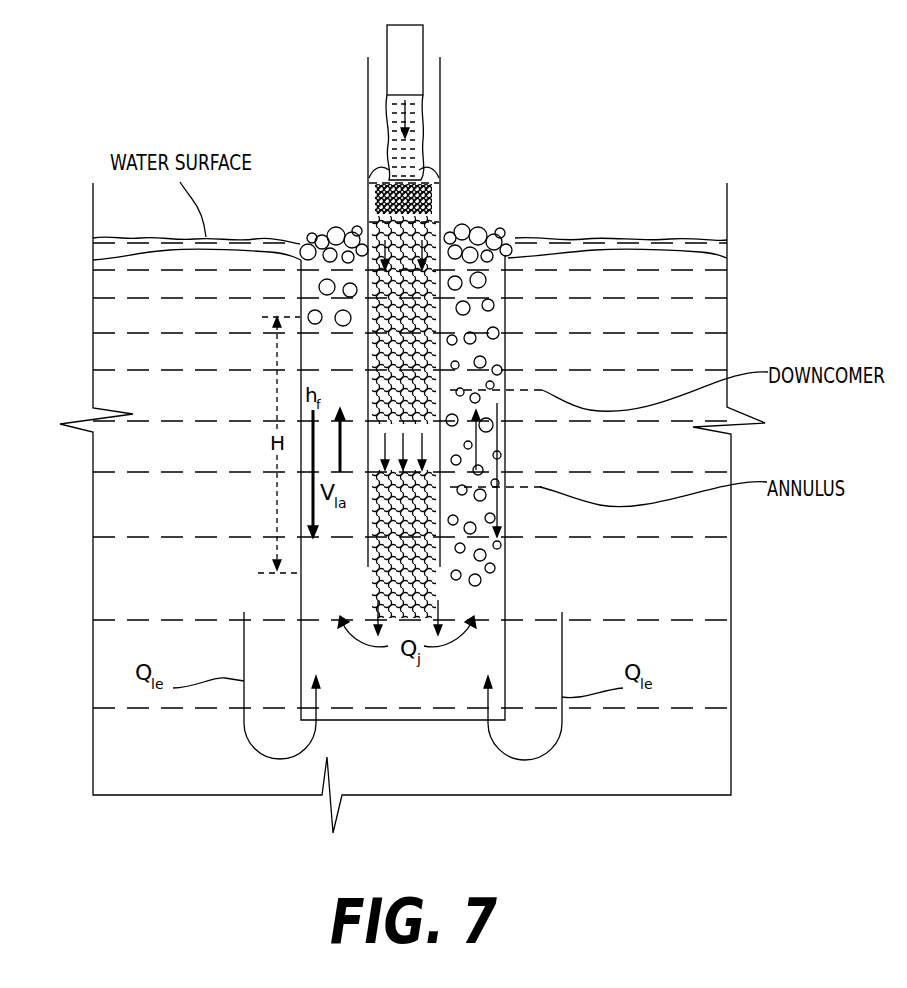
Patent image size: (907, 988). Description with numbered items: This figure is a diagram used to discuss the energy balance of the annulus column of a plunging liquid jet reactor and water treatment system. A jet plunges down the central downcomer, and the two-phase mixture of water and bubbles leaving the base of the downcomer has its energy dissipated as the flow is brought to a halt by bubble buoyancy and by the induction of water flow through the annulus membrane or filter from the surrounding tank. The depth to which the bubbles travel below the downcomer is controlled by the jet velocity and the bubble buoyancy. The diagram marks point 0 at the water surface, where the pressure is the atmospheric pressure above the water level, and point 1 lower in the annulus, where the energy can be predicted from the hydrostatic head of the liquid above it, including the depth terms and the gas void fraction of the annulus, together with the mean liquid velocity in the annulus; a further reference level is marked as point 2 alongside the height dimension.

The point 0 is at (334, 228).
The point 1 is at (311, 574).
The reference level station 2 is at (253, 574).